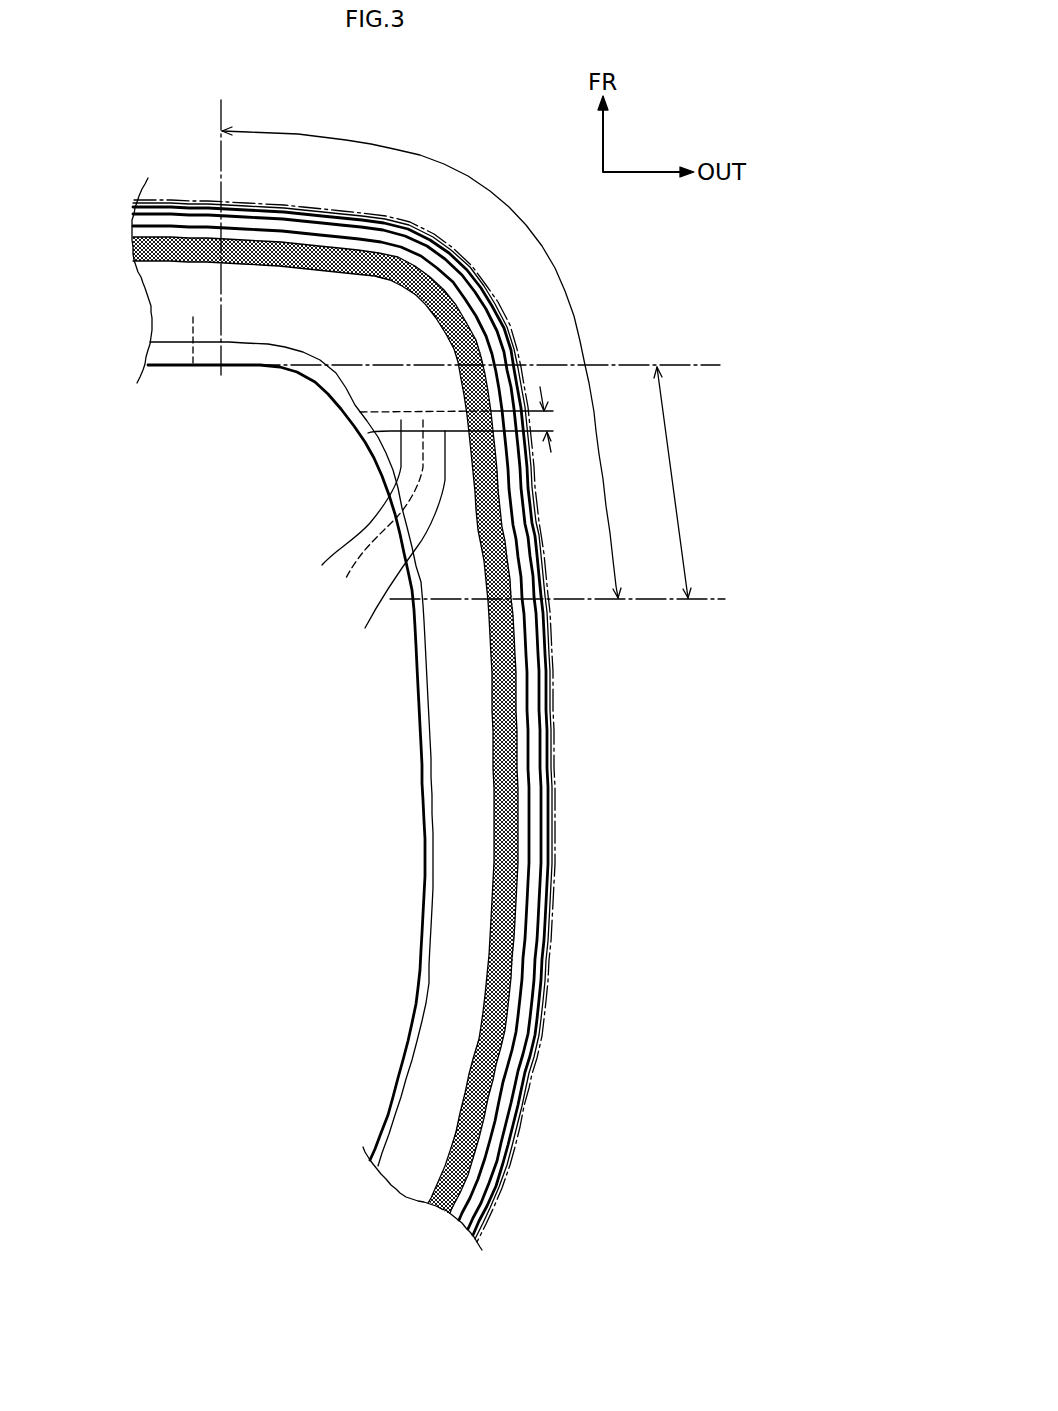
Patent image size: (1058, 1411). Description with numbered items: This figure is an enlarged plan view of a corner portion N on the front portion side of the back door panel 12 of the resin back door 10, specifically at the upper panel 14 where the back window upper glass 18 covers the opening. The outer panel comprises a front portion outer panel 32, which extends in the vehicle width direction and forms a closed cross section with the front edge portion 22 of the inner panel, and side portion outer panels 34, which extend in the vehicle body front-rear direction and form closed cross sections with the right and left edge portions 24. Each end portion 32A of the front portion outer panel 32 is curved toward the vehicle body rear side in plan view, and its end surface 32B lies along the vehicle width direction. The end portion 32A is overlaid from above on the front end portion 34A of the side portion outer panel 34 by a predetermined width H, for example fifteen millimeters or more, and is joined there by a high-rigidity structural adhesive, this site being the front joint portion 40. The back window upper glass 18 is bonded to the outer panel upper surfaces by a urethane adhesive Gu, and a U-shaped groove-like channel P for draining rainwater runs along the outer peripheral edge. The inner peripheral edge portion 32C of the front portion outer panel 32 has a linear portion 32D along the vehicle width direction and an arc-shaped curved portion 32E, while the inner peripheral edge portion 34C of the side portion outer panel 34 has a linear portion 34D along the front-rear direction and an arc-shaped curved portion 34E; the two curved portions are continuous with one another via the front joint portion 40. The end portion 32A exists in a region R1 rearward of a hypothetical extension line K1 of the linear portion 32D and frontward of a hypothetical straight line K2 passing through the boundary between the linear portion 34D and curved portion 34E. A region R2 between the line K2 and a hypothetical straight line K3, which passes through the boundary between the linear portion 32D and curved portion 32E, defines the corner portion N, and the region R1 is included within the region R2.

The resin back door 10 is at (600, 793).
The back door panel 12 is at (572, 747).
The upper panel 14 is at (562, 898).
The back window upper glass 18 is at (527, 1095).
The front edge portion 22 is at (194, 372).
The right and left edge portions 24 is at (465, 910).
The front portion outer panel 32 is at (202, 222).
The side portion outer panels 34 is at (528, 686).
The right and left end portions 32A is at (297, 578).
The end surfaces 32B is at (390, 543).
The inner peripheral edge portion 32C is at (173, 369).
The linear portion 32D is at (155, 367).
The curved portion 32E is at (279, 369).
The front end portions 34A is at (364, 518).
The inner peripheral edge portion 34C is at (417, 998).
The linear portion 34D is at (422, 788).
The curved portion 34E is at (377, 455).
The front joint portions 40 is at (358, 432).
The corner portion N is at (462, 165).
The channel P is at (523, 988).
The urethane adhesive Gu is at (505, 734).
The predetermined width H is at (545, 417).
The region R1 is at (672, 468).
The region R2 is at (565, 273).
The hypothetical extension line K1 is at (703, 363).
The hypothetical straight line K2 is at (703, 602).
The hypothetical straight line K3 is at (221, 115).